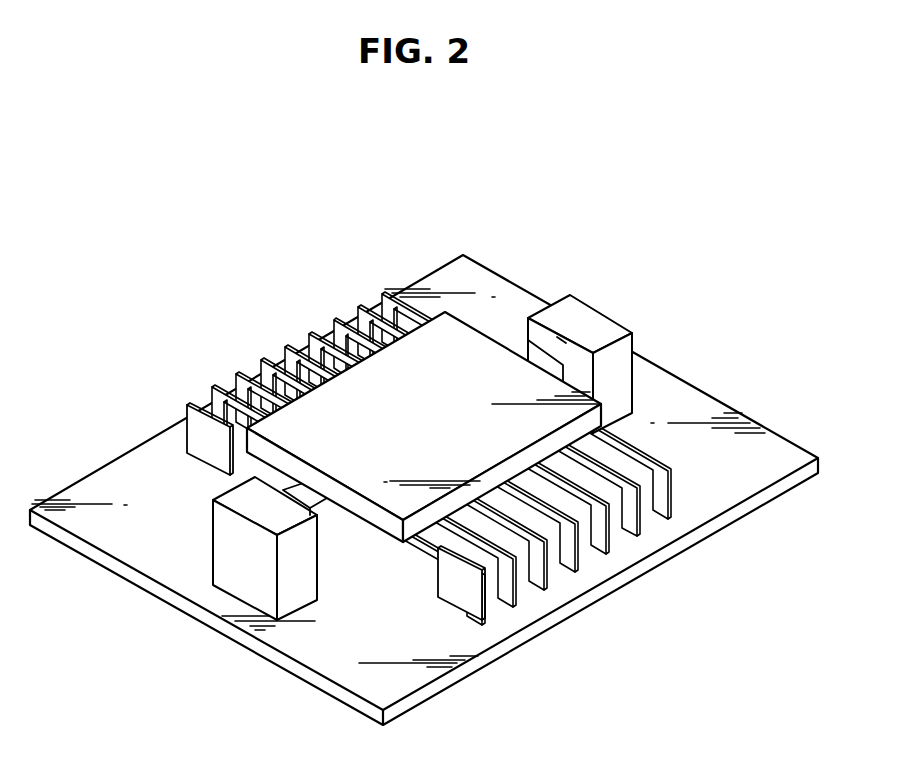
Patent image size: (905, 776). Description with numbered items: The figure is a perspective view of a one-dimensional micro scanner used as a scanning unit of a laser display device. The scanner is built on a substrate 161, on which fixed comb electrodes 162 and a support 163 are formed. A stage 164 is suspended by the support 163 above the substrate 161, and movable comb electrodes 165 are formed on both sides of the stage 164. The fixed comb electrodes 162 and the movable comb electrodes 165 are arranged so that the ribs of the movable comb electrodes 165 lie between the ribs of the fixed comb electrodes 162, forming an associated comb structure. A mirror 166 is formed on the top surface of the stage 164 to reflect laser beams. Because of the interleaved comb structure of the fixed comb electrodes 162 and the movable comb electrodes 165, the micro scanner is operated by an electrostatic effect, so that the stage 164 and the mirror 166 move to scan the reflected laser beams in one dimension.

The substrate 161 is at (635, 571).
The fixed comb electrodes 162 is at (485, 607).
The support 163 is at (605, 330).
The stage 164 is at (615, 342).
The movable comb electrodes 165 is at (518, 585).
The mirror 166 is at (475, 345).